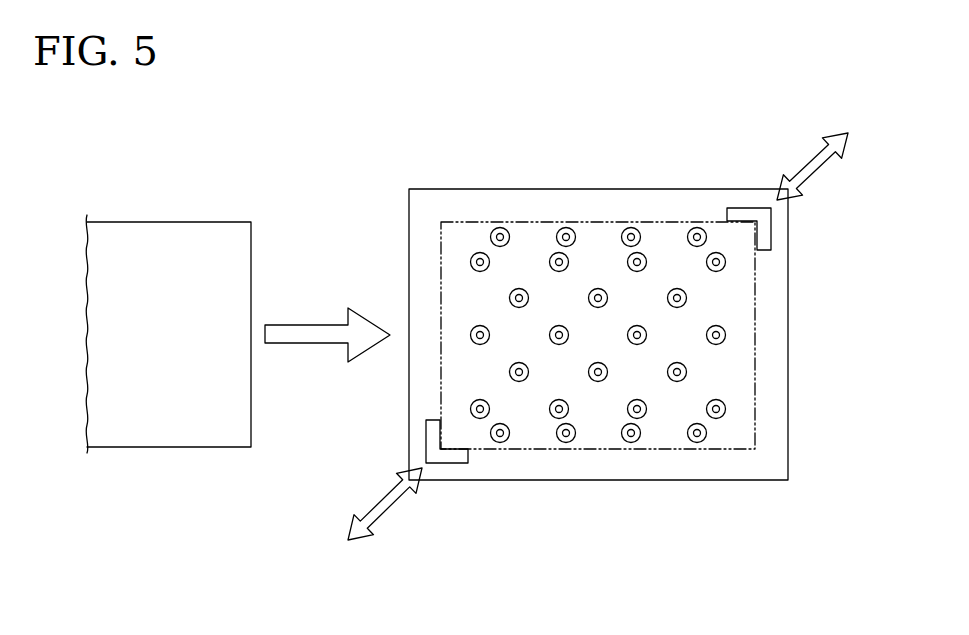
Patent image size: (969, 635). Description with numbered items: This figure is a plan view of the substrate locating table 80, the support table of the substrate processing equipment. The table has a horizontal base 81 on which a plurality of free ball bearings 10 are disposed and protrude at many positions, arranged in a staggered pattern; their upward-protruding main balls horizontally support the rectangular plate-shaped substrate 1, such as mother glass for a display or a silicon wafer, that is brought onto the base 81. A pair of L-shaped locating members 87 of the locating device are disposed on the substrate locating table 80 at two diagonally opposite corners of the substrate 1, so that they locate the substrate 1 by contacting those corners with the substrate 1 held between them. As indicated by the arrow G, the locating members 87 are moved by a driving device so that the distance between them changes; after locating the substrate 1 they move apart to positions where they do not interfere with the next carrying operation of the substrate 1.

The substrate 1 is at (181, 447).
The free ball bearing 10 is at (726, 335).
The substrate locating table 80 is at (600, 396).
The base 81 is at (692, 482).
The locating member 87 is at (771, 228).
The arrow G is at (813, 168).